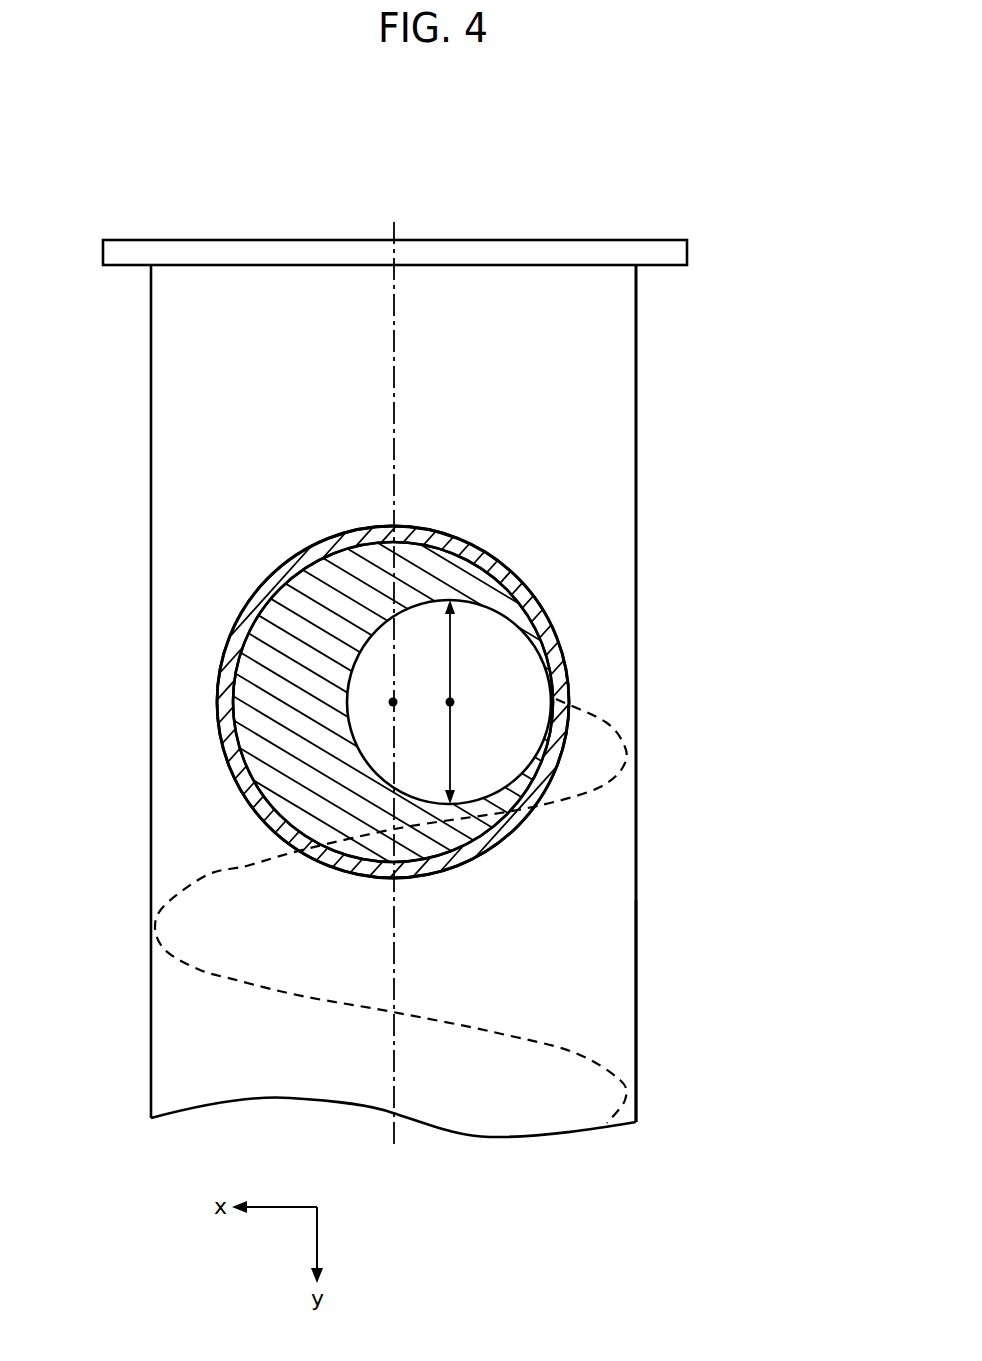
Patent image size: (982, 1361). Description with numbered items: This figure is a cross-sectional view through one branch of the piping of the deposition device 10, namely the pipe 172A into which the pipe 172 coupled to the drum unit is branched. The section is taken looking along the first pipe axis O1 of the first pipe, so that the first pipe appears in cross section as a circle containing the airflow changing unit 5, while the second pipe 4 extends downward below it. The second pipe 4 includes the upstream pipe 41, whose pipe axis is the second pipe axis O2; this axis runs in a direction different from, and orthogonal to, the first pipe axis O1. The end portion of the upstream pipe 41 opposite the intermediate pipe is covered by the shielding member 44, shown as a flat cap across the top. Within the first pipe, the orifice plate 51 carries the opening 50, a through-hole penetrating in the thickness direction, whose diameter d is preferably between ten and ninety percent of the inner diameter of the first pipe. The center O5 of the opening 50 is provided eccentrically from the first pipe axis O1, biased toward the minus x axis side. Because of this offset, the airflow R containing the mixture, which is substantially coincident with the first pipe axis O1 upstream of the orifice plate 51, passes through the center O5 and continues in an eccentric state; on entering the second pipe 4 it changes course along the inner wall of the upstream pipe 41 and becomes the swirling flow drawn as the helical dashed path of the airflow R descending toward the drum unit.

The deposition device 10 is at (676, 112).
The second pipe 4 is at (439, 657).
The upstream pipe 41 is at (150, 456).
The shielding member 44 is at (298, 253).
The second pipe axis O2 is at (396, 284).
The airflow changing unit 5 is at (457, 708).
The orifice plate 51 is at (487, 570).
The opening 50 is at (523, 740).
The first pipe axis O1 is at (393, 702).
The center of the opening O5 is at (450, 702).
The diameter of the opening d is at (452, 647).
The airflow R is at (493, 1032).
The pipe 172A is at (637, 1057).
The pipe 172 is at (722, 1011).